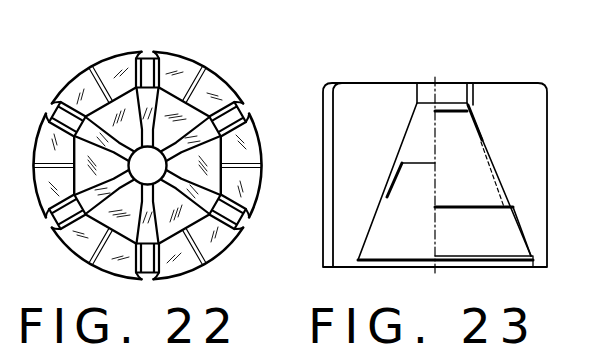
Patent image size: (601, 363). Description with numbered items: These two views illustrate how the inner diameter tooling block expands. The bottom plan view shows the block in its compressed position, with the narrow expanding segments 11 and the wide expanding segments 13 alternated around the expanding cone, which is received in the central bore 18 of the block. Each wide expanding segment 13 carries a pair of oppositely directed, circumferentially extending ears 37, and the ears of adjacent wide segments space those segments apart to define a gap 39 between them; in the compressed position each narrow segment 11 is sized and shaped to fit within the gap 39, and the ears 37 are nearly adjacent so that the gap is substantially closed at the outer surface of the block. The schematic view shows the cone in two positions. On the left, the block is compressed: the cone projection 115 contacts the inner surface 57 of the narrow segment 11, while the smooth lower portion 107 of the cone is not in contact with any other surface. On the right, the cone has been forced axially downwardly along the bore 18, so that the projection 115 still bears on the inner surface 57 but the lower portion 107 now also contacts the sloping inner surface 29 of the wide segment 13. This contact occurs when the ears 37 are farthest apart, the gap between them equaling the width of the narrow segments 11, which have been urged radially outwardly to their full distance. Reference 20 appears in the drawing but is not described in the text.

In FIG. 23, the narrow expanding segment 11 is at (378, 92).
In FIG. 22, the wide expanding segment 13 is at (213, 63).
In FIG. 23, the wide expanding segment 13 is at (524, 257).
In FIG. 23, the bore 18 is at (419, 141).
In FIG. 23, the housing 20 is at (594, 172).
In FIG. 23, the sloping inner surface 29 is at (508, 222).
In FIG. 22, the ear 37 is at (142, 55).
In FIG. 23, the ear 37 is at (326, 92).
In FIG. 22, the gap 39 is at (240, 108).
In FIG. 23, the inner surface 57 is at (433, 136).
In FIG. 23, the lower portion 107 is at (472, 117).
In FIG. 23, the projection 115 is at (498, 167).